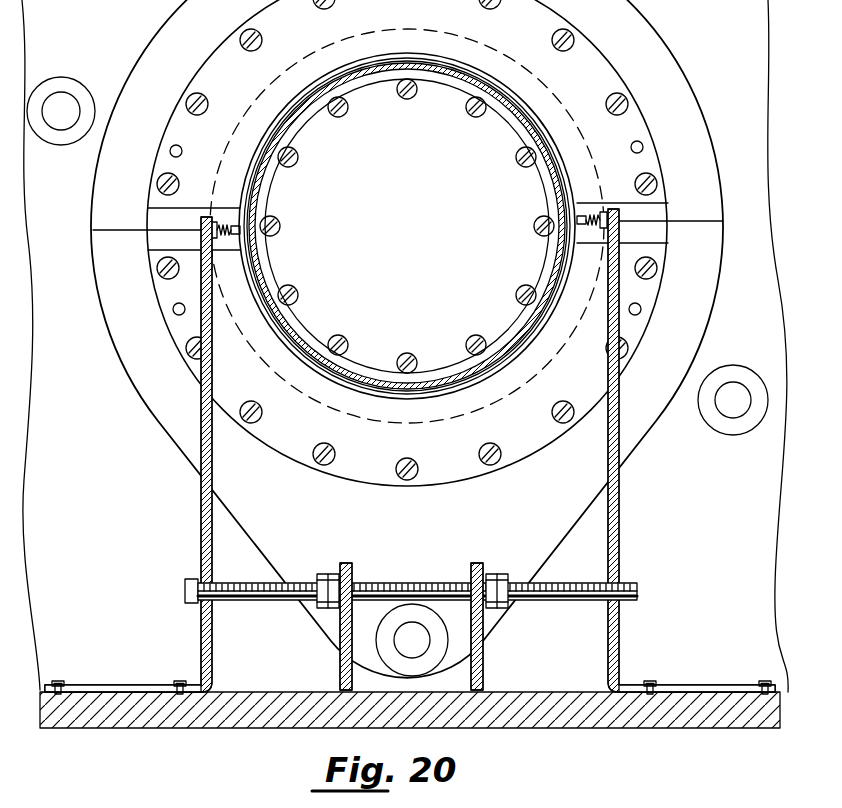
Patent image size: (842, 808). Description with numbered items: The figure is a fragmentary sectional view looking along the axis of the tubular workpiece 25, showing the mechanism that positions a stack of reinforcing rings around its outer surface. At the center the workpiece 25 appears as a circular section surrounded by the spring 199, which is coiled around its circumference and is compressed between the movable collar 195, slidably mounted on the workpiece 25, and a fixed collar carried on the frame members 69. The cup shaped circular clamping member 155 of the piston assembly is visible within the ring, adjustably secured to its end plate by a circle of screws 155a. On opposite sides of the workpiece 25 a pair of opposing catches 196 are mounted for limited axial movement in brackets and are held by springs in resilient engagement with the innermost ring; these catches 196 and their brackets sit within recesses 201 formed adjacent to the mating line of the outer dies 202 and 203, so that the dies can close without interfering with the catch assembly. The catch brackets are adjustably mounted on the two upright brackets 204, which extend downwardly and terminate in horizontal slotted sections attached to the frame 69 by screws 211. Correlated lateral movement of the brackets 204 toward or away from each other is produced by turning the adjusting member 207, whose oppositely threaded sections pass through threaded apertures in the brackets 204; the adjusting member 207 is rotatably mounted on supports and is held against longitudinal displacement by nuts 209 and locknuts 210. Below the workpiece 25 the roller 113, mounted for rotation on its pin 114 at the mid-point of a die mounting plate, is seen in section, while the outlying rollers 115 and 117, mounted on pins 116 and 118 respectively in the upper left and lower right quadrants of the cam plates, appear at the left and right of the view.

The workpiece 25 is at (280, 190).
The frame member 69 is at (270, 692).
The roller 113 is at (414, 604).
The pin 114 is at (410, 632).
The roller 115 is at (80, 88).
The pin 116 is at (68, 124).
The roller 117 is at (734, 366).
The pin 118 is at (732, 418).
The clamping member 155 is at (418, 210).
The screw 155a is at (470, 116).
The collar 195 is at (258, 258).
The catch 196 is at (216, 220).
The spring 199 is at (440, 56).
The recess 201 is at (160, 226).
The outer die 202 is at (172, 280).
The outer die 203 is at (172, 181).
The bracket 204 is at (201, 526).
The adjusting member 207 is at (290, 584).
The nut 209 is at (334, 570).
The locknut 210 is at (338, 608).
The screw 211 is at (178, 684).